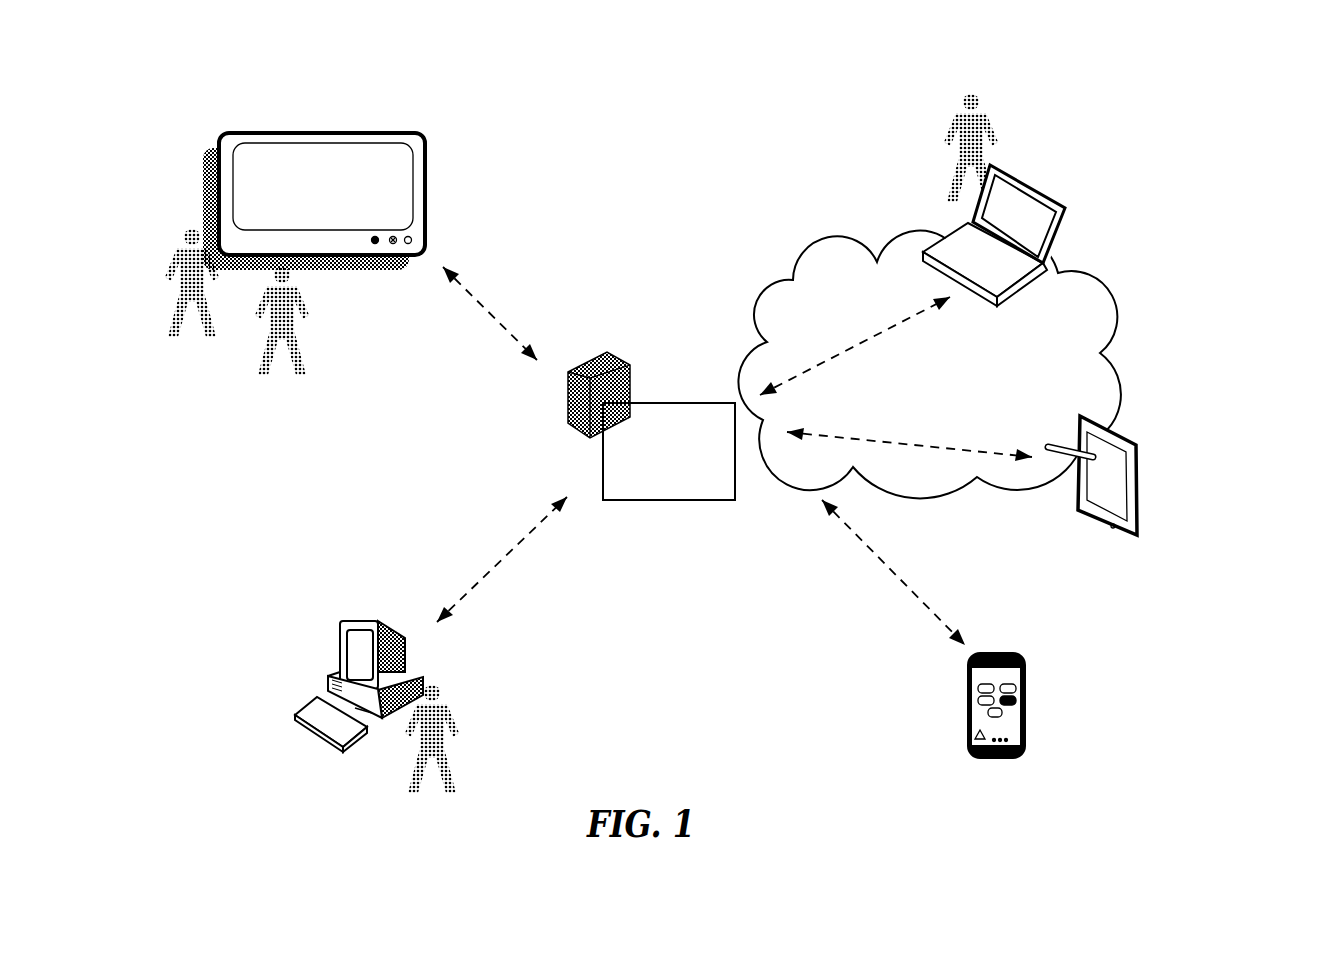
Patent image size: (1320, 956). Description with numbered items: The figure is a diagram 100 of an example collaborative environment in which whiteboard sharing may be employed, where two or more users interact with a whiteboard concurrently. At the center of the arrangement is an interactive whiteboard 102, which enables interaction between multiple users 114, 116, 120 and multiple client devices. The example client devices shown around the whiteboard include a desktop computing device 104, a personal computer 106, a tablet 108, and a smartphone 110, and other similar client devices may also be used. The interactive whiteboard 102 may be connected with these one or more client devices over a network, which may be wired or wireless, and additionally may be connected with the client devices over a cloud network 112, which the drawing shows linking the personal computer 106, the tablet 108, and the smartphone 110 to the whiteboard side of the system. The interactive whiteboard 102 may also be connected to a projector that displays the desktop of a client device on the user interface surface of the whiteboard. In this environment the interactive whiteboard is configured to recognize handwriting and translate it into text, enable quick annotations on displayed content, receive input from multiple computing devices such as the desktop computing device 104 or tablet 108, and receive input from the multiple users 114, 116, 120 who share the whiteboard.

The diagram 100 is at (1197, 78).
The interactive whiteboard 102 is at (355, 110).
The desktop computing device 104 is at (330, 605).
The personal computer 106 is at (1035, 163).
The tablet 108 is at (1123, 428).
The smartphone 110 is at (978, 748).
The cloud network 112 is at (638, 360).
The users 114 is at (232, 370).
The user 116 is at (383, 790).
The user 120 is at (935, 137).